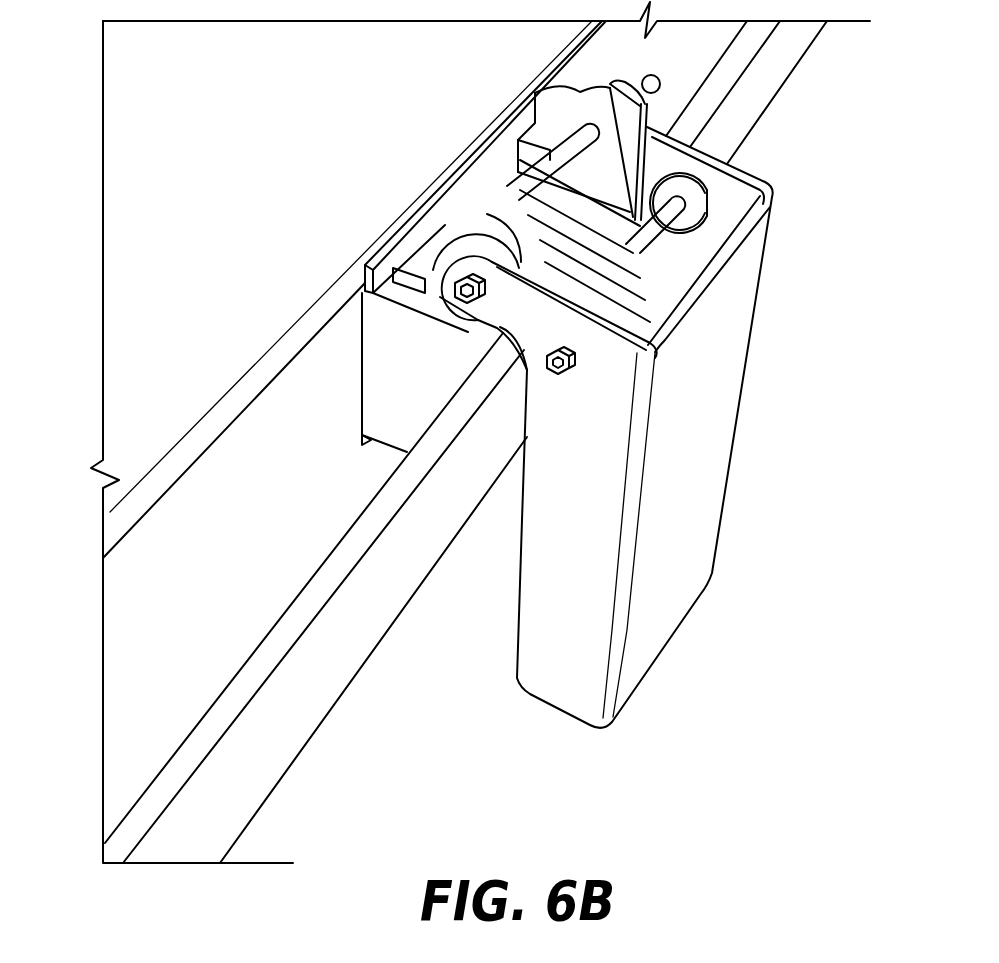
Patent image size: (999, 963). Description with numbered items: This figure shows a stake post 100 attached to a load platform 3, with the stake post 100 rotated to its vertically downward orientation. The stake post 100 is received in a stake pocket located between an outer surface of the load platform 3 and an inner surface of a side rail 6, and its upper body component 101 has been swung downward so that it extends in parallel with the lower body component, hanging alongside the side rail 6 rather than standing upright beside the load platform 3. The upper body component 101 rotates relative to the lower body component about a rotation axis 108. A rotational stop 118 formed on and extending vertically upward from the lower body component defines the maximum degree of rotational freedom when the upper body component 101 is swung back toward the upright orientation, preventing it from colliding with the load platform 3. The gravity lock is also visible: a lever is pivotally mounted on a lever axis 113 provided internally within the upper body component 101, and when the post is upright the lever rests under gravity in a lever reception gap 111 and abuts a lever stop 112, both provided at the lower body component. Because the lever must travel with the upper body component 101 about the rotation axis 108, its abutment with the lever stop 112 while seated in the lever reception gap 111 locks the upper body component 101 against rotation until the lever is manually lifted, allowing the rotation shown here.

The load platform 3 is at (190, 367).
The side rail 6 is at (340, 572).
The stake post 100 is at (876, 106).
The upper body component 101 is at (690, 533).
The rotation axis 108 is at (533, 207).
The lever reception gap 111 is at (607, 97).
The lever stop 112 is at (640, 108).
The lever axis 113 is at (640, 257).
The rotational stop 118 is at (477, 152).